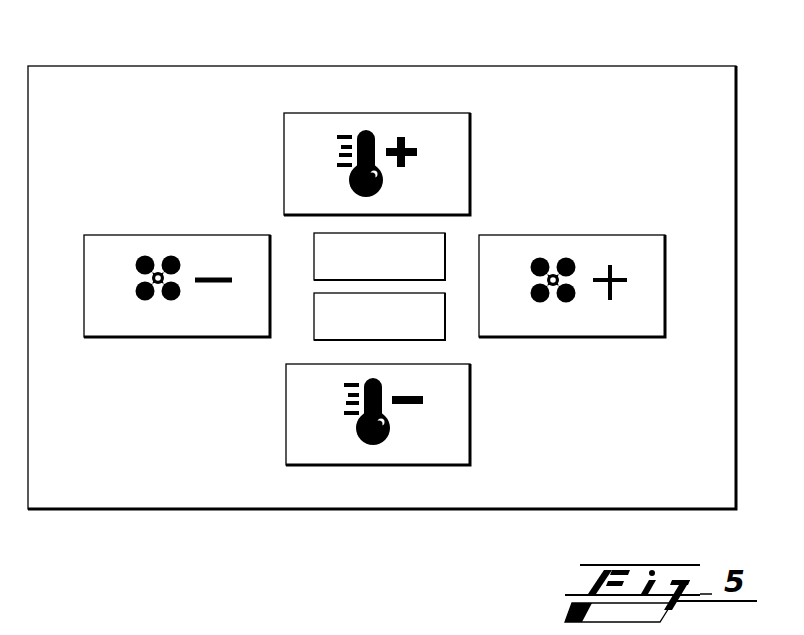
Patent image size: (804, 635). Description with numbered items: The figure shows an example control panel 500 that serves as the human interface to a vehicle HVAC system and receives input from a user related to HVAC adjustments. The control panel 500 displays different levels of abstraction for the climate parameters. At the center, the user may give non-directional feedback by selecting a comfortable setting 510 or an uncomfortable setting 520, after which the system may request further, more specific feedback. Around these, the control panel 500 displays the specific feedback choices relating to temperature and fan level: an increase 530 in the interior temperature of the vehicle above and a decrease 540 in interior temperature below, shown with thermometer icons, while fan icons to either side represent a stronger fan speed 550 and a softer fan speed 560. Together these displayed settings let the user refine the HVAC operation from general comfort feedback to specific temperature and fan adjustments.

The control panel 500 is at (175, 66).
The comfortable setting 510 is at (400, 267).
The uncomfortable setting 520 is at (400, 327).
The increase in interior temperature 530 is at (284, 188).
The decrease in interior temperature 540 is at (470, 408).
The stronger fan speed 550 is at (610, 235).
The softer fan speed 560 is at (133, 337).